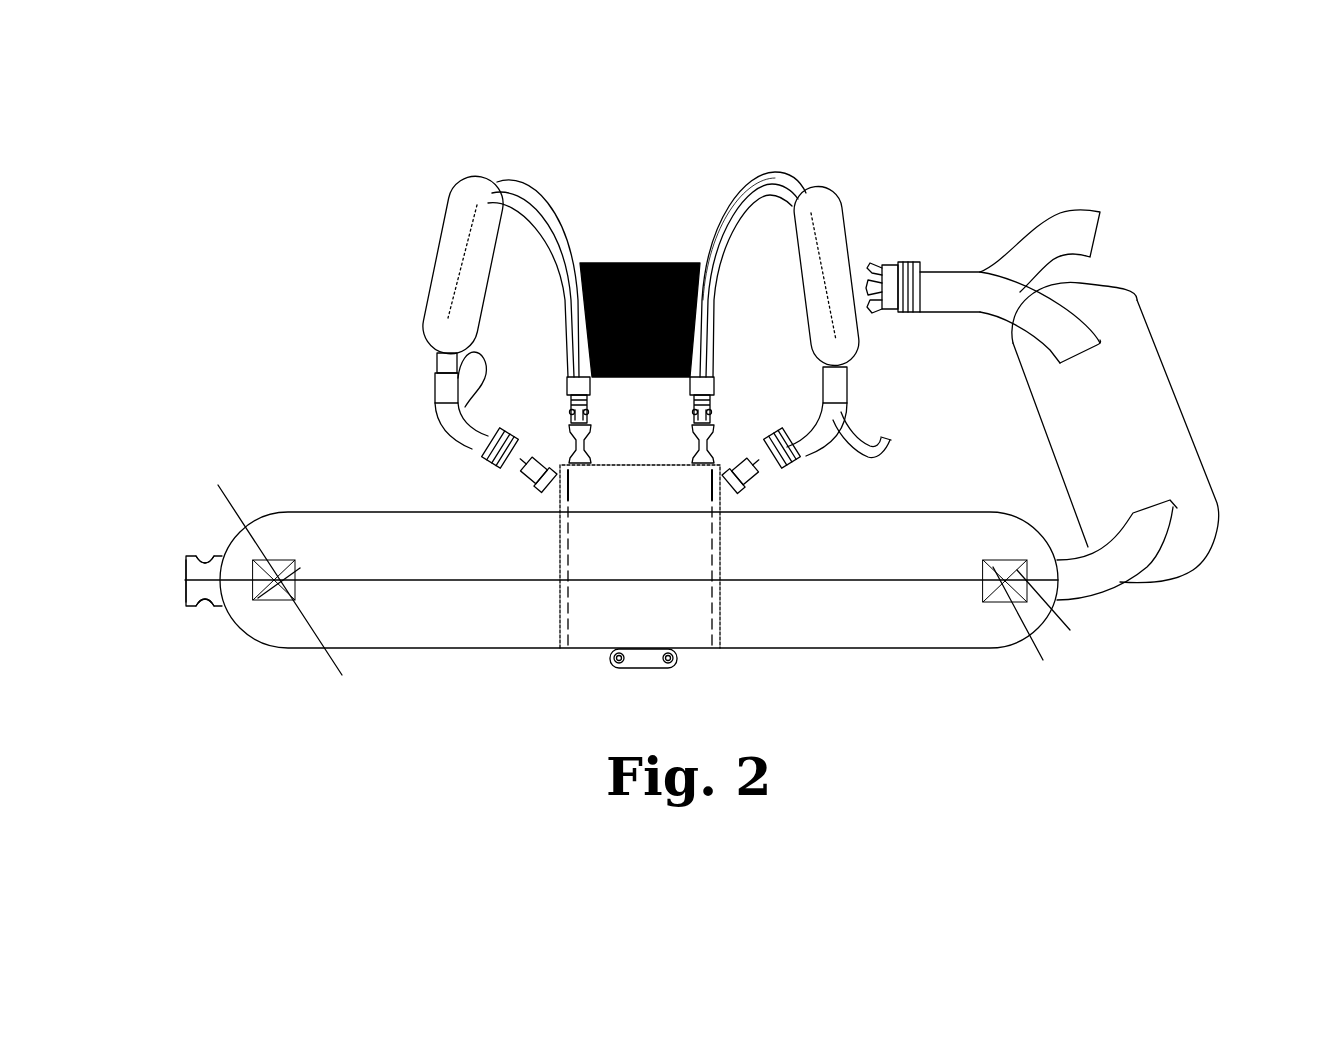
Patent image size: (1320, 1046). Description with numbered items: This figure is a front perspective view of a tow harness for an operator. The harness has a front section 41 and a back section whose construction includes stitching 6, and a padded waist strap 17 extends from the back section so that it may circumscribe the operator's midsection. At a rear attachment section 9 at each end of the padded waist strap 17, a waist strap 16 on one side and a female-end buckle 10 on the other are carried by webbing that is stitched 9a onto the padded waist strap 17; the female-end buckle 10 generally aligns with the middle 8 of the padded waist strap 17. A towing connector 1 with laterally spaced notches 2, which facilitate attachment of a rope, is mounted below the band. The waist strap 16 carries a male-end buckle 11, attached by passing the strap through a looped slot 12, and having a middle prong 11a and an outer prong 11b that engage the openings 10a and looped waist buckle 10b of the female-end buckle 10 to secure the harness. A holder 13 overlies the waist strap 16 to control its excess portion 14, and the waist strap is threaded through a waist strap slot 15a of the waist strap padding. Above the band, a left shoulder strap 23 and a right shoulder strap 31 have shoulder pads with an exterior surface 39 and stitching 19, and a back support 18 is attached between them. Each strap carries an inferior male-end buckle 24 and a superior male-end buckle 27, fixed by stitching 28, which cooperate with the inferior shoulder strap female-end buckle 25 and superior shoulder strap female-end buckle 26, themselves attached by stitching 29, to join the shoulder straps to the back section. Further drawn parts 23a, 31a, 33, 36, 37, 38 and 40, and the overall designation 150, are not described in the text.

The towing connector 1 is at (645, 660).
The laterally spaced notches 2 is at (615, 662).
The stitching 6 is at (574, 586).
The middle of the padded waist strap 8 is at (512, 582).
The rear attachment section 9 is at (647, 579).
The stitching 9a is at (266, 578).
The female-end buckle 10 is at (200, 576).
The openings 10a is at (206, 600).
The looped waist buckle 10b is at (205, 556).
The male-end buckle 11 is at (902, 264).
The middle prong 11a is at (878, 262).
The outer prong 11b is at (882, 302).
The looped slot 12 is at (921, 266).
The holder 13 is at (980, 280).
The excess portion of the waist strap 14 is at (1075, 226).
The waist strap slot 15a is at (1105, 348).
The waist strap 16 is at (1105, 578).
The padded waist strap 17 is at (393, 620).
The back support 18 is at (650, 263).
The stitching 19 is at (760, 180).
The left shoulder strap 23 is at (470, 374).
The tube 23a is at (452, 428).
The inferior male-end buckle 24 is at (490, 457).
The inferior shoulder strap female-end buckle 25 is at (538, 478).
The superior shoulder strap female-end buckle 26 is at (592, 440).
The superior male-end buckle 27 is at (711, 407).
The stitching 28 is at (714, 380).
The stitching 29 is at (582, 488).
The right shoulder strap 31 is at (890, 446).
The hose 31a is at (843, 422).
The end wall 33 is at (208, 590).
The shoulder pad 36 is at (443, 292).
The pad seam 37 is at (465, 226).
The pad connector 38 is at (437, 364).
The exterior surface 39 is at (560, 208).
The pouch 40 is at (1142, 358).
The front section 41 is at (648, 528).
The harness assembly 150 is at (812, 713).